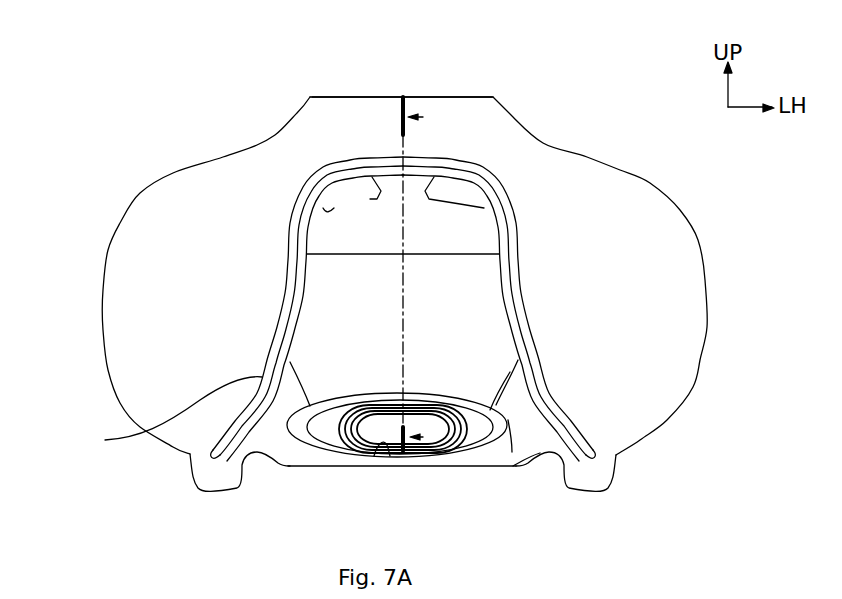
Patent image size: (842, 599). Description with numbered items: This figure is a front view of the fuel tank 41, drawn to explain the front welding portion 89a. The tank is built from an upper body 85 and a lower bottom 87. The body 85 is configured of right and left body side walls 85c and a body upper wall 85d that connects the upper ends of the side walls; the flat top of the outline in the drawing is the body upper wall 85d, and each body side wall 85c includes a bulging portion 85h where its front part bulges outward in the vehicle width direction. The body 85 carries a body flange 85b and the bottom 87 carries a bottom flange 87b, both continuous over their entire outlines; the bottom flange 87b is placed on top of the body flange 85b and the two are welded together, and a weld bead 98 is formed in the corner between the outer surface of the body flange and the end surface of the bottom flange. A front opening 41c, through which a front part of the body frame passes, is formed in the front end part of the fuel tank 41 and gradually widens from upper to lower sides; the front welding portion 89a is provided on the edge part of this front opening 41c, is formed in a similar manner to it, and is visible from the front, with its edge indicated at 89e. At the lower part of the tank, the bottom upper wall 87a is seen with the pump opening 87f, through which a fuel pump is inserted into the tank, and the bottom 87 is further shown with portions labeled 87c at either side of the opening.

The fuel tank 41 is at (223, 121).
The front opening 41c is at (488, 237).
The body 85 is at (670, 190).
The body flange 85b is at (521, 337).
The body side wall 85c is at (110, 228).
The body upper wall 85d is at (362, 95).
The bulging portion 85h is at (114, 310).
The bottom 87 is at (220, 474).
The bottom upper wall 87a is at (340, 377).
The bottom flange 87b is at (512, 452).
The leg portion of lower cover 87c is at (272, 426).
The pump opening 87f is at (387, 456).
The front welding portion 89a is at (521, 261).
The edge of channel rib 89e is at (275, 309).
The weld bead 98 is at (168, 414).